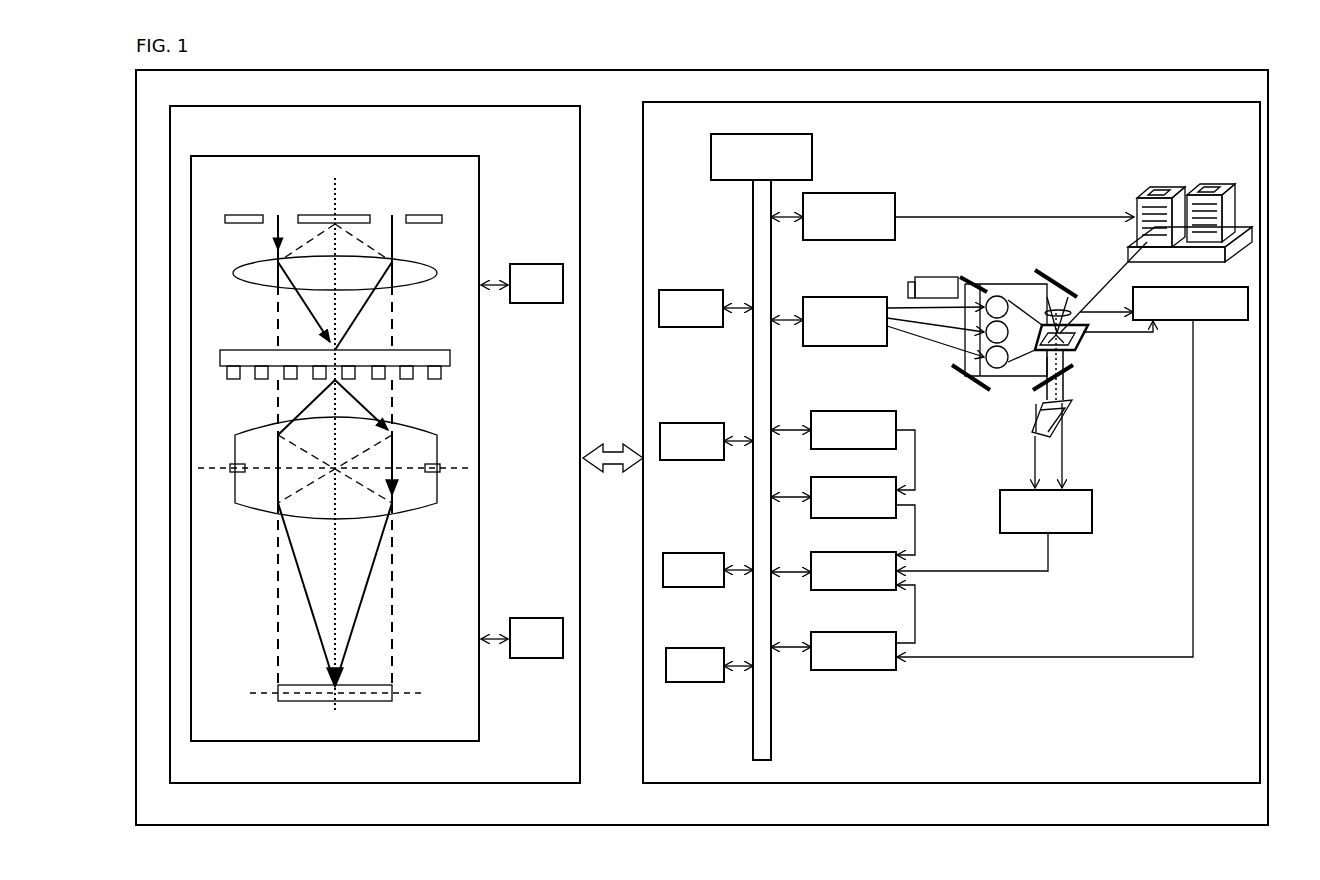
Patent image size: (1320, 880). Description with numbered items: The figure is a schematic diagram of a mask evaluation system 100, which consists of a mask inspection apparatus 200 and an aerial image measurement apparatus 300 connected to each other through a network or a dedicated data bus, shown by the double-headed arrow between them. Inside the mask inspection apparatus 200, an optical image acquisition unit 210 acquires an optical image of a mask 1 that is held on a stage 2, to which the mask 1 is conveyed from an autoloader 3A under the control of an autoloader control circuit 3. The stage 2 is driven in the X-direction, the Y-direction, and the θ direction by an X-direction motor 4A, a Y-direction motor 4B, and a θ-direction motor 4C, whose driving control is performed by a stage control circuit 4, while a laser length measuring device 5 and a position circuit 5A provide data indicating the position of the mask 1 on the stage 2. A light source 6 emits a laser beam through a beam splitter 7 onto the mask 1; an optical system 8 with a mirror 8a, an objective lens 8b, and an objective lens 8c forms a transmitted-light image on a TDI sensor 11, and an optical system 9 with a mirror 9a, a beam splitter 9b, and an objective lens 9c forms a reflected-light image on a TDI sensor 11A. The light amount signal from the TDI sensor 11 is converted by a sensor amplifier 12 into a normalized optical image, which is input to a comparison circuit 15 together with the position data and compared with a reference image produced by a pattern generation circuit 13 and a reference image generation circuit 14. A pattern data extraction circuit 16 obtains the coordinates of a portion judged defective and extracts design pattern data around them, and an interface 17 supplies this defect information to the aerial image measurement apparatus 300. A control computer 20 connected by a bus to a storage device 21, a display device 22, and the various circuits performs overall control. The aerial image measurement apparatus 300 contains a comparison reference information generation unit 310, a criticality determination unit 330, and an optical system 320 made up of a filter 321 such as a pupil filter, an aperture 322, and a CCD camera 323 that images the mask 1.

The mask evaluation system 100 is at (636, 58).
The aerial image measurement apparatus 300 is at (352, 106).
The optical system 320 is at (353, 156).
The filter 321 is at (240, 214).
The mask 1 is at (250, 350).
The aperture 322 is at (232, 465).
The CCD camera 323 is at (276, 685).
The comparison reference information generation unit 310 is at (515, 264).
The criticality determination unit 330 is at (515, 618).
The mask inspection apparatus 200 is at (934, 104).
The control computer 20 is at (815, 160).
The autoloader control circuit 3 is at (840, 194).
The storage device 21 is at (682, 290).
The stage control circuit 4 is at (824, 297).
The display device 22 is at (684, 423).
The pattern data extraction circuit 16 is at (677, 553).
The interface 17 is at (683, 648).
The pattern generation circuit 13 is at (830, 411).
The reference image generation circuit 14 is at (830, 477).
The comparison circuit 15 is at (830, 552).
The position circuit 5A is at (840, 632).
The sensor amplifier 12 is at (1092, 512).
The laser length measuring device 5 is at (1200, 320).
The autoloader 3A is at (1153, 263).
The light source 6 is at (908, 290).
The beam splitter 7 is at (972, 284).
The optical image acquisition unit 210 is at (998, 256).
The θ-direction motor 4C is at (1008, 304).
The X-direction motor 4A is at (1006, 329).
The Y-direction motor 4B is at (1000, 352).
The stage 2 is at (1076, 352).
The mirror 8a is at (1046, 272).
The optical system 8 is at (1070, 276).
The objective lens 8b is at (1066, 306).
The optical system 9 is at (962, 386).
The mirror 9a is at (954, 370).
The beam splitter 9b is at (1076, 368).
The objective lens 9c is at (1074, 402).
The objective lens 8c is at (1040, 415).
The TDI sensor 11A is at (1076, 420).
The TDI sensor 11 is at (1032, 438).